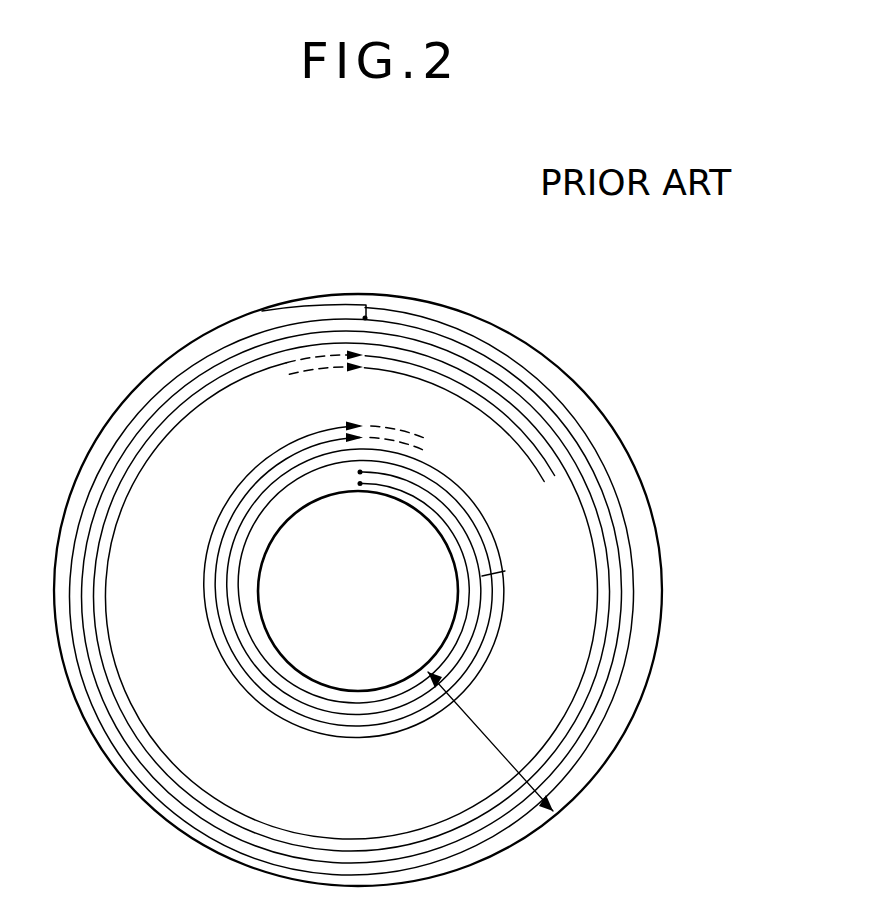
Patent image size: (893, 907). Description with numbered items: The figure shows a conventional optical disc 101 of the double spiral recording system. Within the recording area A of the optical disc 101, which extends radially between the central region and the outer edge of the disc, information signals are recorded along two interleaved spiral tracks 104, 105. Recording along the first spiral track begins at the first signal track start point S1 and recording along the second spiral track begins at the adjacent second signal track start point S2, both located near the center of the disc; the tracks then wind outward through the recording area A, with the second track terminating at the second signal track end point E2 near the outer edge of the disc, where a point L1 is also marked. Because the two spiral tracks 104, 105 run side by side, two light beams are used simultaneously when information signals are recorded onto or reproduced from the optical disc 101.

The optical disc 101 is at (485, 318).
The spiral track 104 is at (504, 572).
The spiral track 105 is at (457, 645).
The second signal track end point E2 is at (366, 304).
The first lap end L1 is at (367, 318).
The first signal track start point S1 is at (361, 484).
The second signal track start point S2 is at (360, 472).
The recording area A is at (500, 747).